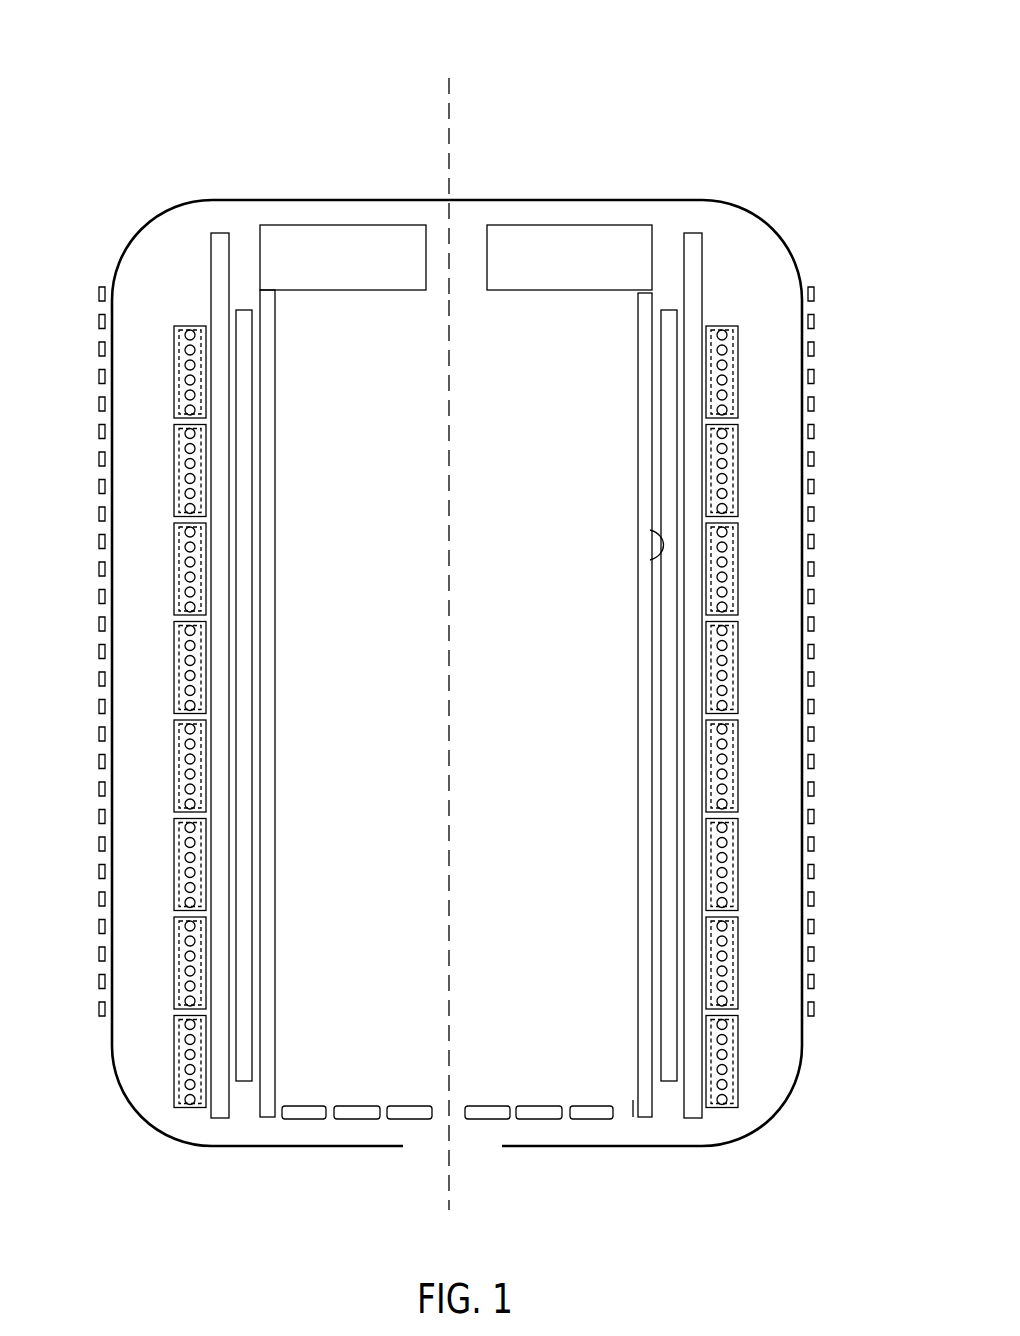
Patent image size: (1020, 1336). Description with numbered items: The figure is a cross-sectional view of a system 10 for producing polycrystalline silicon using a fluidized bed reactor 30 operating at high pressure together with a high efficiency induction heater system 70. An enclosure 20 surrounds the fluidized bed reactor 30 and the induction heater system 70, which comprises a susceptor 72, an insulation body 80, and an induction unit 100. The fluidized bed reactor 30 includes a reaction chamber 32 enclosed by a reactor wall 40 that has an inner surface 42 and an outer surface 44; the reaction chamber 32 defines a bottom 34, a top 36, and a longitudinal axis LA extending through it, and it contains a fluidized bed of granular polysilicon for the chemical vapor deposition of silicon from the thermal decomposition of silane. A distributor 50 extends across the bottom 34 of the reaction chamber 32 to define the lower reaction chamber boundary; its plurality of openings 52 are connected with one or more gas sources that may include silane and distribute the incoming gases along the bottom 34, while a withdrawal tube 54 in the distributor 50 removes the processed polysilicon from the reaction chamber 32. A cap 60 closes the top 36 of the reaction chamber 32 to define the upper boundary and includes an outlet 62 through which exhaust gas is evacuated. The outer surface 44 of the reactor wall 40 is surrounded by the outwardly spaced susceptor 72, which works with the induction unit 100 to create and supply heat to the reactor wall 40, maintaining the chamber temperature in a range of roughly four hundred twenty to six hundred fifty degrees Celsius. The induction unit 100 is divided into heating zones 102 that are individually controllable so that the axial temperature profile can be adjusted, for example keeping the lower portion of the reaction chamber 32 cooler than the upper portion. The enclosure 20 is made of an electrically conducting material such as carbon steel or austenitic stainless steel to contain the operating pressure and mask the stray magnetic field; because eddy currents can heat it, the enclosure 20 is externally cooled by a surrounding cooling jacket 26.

The system 10 is at (692, 80).
The enclosure 20 is at (124, 222).
The cooling jacket 26 is at (818, 578).
The fluidized bed reactor 30 is at (363, 212).
The reaction chamber 32 is at (495, 679).
The bottom 34 is at (628, 1100).
The top 36 is at (343, 298).
The reactor wall 40 is at (636, 418).
The inner surface 42 is at (637, 485).
The outer surface 44 is at (650, 560).
The distributor 50 is at (313, 1100).
The openings 52 is at (567, 1124).
The withdrawal tube 54 is at (440, 1104).
The cap 60 is at (562, 242).
The outlet 62 is at (443, 228).
The induction heater system 70 is at (809, 703).
The susceptor 72 is at (232, 316).
The insulation body 80 is at (706, 233).
The induction unit 100 is at (724, 1112).
The heating zones 102 is at (736, 395).
The longitudinal axis LA is at (451, 104).